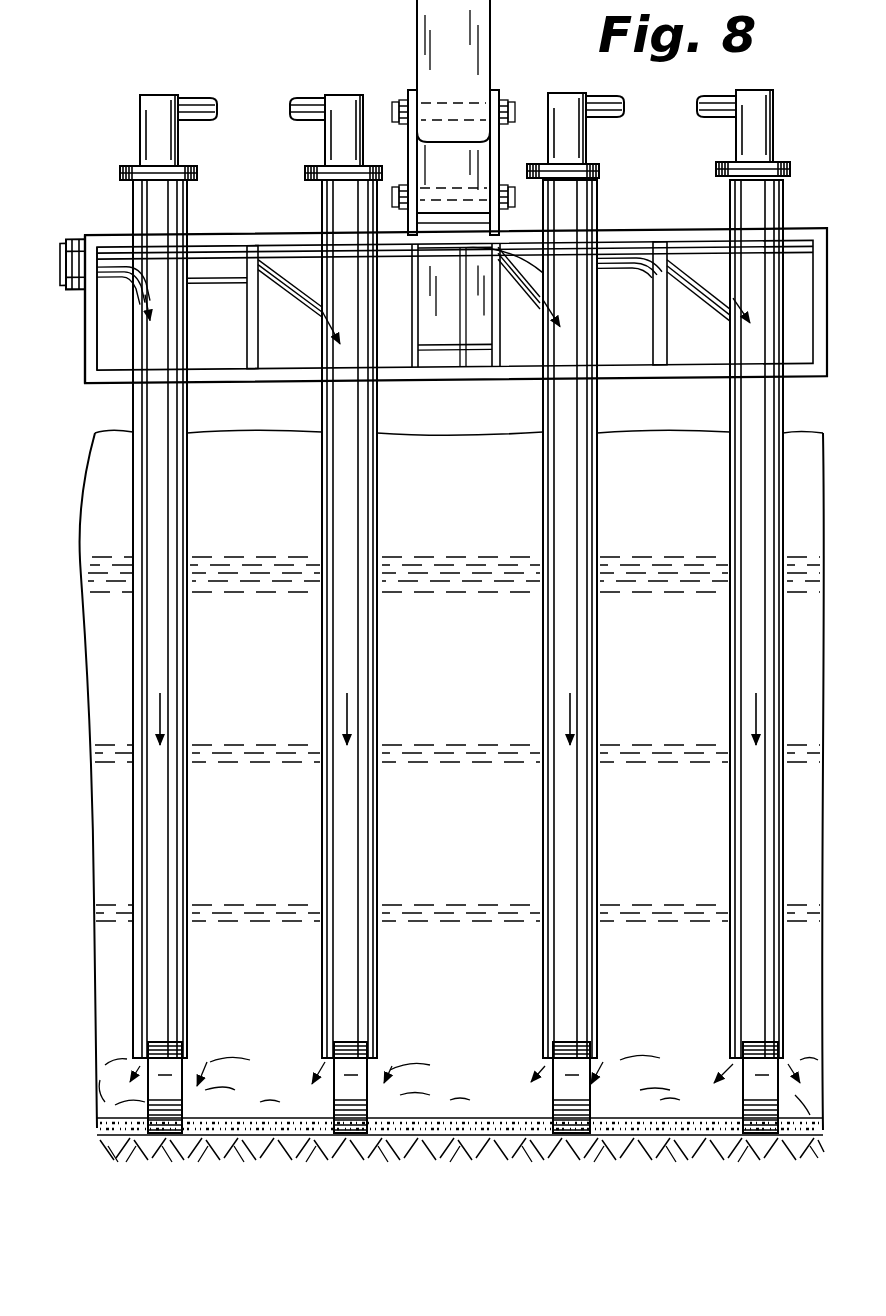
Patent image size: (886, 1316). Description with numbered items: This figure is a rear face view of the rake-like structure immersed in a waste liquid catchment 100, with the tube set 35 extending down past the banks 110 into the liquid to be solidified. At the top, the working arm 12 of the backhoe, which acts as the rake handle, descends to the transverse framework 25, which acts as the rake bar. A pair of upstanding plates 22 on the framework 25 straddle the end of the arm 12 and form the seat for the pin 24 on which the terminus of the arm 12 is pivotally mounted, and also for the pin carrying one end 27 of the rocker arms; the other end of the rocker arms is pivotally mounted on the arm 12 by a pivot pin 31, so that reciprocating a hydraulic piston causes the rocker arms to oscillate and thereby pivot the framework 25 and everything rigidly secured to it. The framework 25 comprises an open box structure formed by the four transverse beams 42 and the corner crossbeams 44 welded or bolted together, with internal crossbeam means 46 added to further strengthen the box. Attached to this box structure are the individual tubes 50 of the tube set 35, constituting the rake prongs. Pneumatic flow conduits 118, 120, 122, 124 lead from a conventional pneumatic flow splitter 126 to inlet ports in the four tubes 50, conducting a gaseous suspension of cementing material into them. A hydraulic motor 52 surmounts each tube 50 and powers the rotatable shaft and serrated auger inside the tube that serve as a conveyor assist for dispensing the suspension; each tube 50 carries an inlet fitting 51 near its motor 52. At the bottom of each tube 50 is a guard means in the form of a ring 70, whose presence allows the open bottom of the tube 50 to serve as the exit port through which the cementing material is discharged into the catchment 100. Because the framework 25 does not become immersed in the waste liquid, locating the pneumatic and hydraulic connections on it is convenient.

The working arm 12 is at (427, 7).
The upstanding plates 22 is at (421, 332).
The pin 24 is at (458, 100).
The transverse framework 25 is at (822, 212).
The end of rocker arm 27 is at (420, 148).
The pivot pin 31 is at (461, 192).
The tube set 35 is at (123, 425).
The transverse beams 42 is at (275, 212).
The corner crossbeams 44 is at (96, 346).
The internal crossbeam means 46 is at (250, 303).
The tubes 50 is at (178, 412).
The inlet nipple 51 is at (297, 106).
The hydraulic motor 52 is at (142, 128).
The ring 70 is at (340, 1090).
The waste liquor catchment 100 is at (471, 692).
The banks 110 is at (495, 405).
The pneumatic flow conduit 118 is at (690, 284).
The pneumatic flow conduit 120 is at (527, 281).
The pneumatic flow conduit 122 is at (306, 312).
The pneumatic flow conduit 124 is at (108, 282).
The pneumatic flow splitter 126 is at (62, 240).